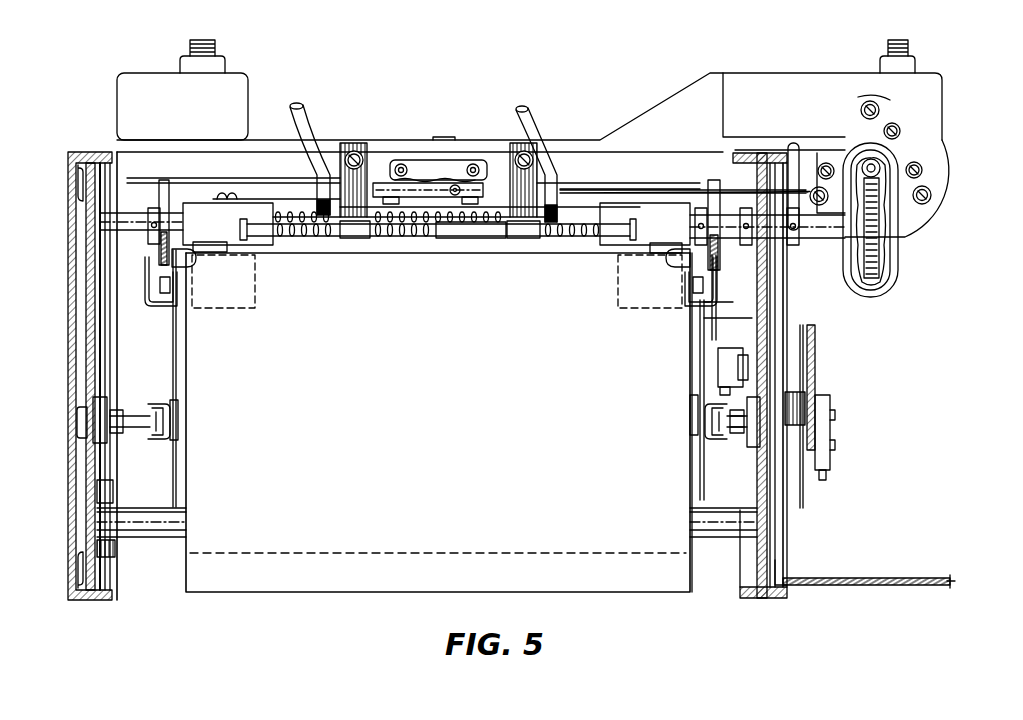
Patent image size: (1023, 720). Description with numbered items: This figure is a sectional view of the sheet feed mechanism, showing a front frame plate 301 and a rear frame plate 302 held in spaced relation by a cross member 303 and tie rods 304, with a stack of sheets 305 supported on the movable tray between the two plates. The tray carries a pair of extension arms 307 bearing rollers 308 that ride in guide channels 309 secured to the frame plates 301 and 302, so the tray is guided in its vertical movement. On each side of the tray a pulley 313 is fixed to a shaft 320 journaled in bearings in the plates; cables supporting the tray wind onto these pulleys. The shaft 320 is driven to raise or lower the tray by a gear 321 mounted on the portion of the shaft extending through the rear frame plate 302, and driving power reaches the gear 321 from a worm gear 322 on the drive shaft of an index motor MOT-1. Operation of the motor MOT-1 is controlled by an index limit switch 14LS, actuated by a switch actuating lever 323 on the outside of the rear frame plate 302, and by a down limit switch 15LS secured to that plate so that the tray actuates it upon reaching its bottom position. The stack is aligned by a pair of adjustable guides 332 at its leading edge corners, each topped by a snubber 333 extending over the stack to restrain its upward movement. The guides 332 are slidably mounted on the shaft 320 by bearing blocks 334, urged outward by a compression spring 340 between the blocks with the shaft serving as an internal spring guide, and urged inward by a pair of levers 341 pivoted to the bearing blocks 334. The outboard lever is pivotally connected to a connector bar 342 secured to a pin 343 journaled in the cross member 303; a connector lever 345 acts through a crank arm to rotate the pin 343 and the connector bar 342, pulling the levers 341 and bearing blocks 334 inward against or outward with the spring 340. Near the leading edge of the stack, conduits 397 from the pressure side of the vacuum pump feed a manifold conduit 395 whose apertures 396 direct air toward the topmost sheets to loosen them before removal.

The front frame plate 301 is at (117, 591).
The rear frame plate 302 is at (767, 542).
The cross member 303 is at (757, 73).
The tie rods 304 is at (180, 518).
The stack of sheets 305 is at (242, 593).
The extension arms 307 is at (178, 402).
The rollers 308 is at (158, 437).
The guide channels 309 is at (157, 423).
The pulley 313 is at (165, 277).
The shaft 320 is at (136, 223).
The gear 321 is at (878, 282).
The worm gear 322 is at (862, 153).
The switch actuating lever 323 is at (810, 423).
The adjustable guides 332 is at (175, 273).
The snubber 333 is at (189, 260).
The bearing blocks 334 is at (203, 210).
The compression spring 340 is at (300, 212).
The levers 341 is at (248, 197).
The connector bar 342 is at (477, 240).
The pin 343 is at (443, 243).
The connector lever 345 is at (733, 177).
The manifold conduit 395 is at (343, 243).
The apertures 396 is at (303, 240).
The conduits 397 is at (303, 110).
The index limit switch 14LS is at (820, 475).
The down limit switch 15LS is at (717, 367).
The index motor MOT-1 is at (925, 230).